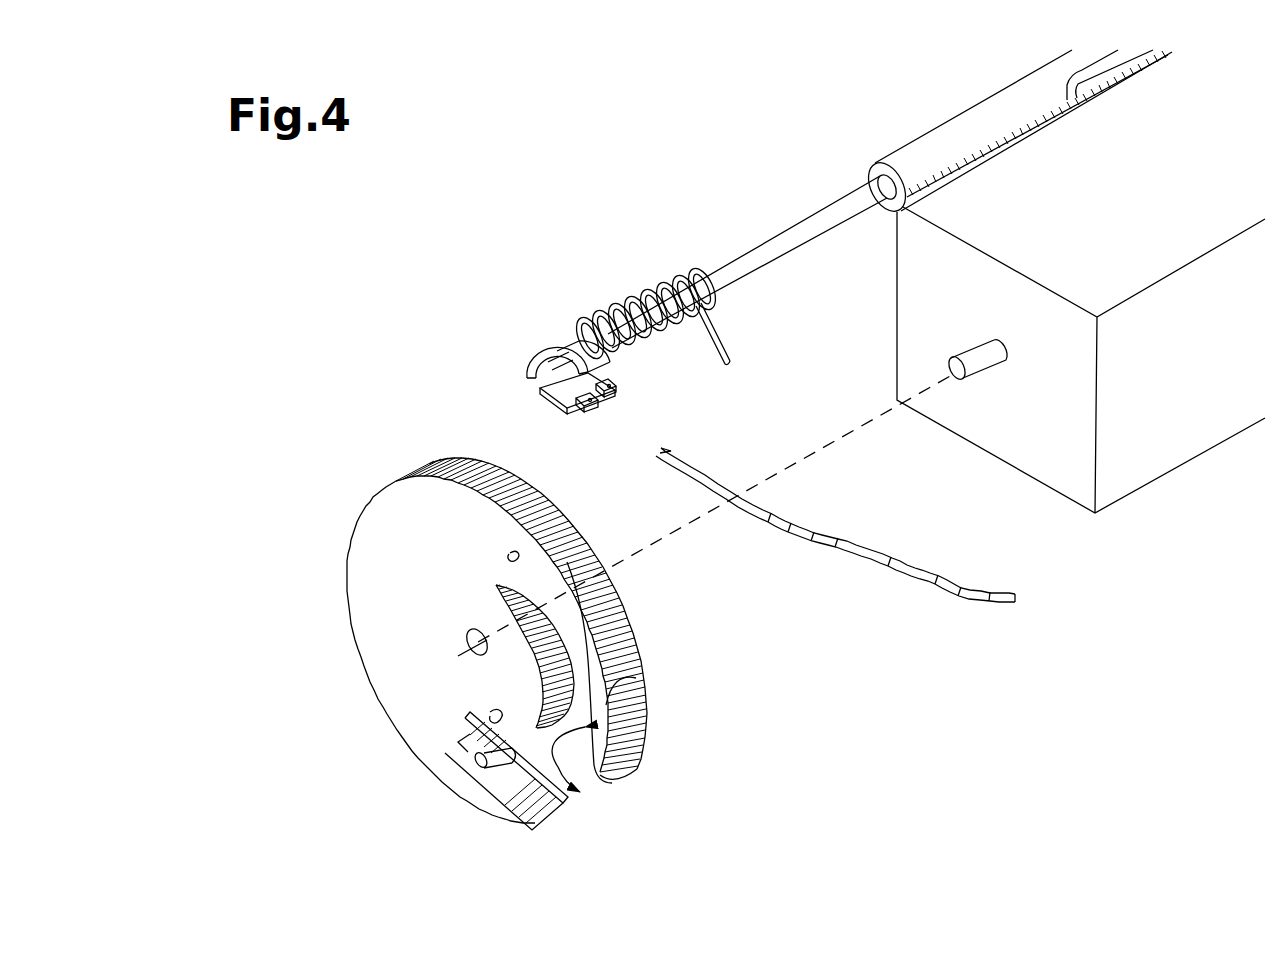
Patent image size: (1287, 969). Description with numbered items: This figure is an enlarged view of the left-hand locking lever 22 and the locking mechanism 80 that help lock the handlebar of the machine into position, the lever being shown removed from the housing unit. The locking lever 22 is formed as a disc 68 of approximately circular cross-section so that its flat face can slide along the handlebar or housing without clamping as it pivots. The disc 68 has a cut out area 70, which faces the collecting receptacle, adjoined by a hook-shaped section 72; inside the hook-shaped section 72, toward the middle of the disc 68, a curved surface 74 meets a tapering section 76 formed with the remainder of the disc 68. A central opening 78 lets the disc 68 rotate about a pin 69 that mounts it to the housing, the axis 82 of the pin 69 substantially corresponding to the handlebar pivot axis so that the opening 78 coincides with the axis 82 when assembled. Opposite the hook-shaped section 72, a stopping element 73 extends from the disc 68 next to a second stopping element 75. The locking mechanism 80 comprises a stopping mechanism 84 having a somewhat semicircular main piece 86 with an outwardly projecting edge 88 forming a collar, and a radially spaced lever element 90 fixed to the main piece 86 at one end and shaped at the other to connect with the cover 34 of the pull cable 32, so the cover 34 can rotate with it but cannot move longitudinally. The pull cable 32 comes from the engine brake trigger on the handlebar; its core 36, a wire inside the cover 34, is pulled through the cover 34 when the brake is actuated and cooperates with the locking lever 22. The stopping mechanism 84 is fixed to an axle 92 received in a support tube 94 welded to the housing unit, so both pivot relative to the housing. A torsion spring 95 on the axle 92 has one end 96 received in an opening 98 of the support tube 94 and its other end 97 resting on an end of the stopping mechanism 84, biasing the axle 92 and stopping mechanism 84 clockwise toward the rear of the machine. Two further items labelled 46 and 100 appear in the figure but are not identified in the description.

The locking lever 22 is at (464, 563).
The pull cable 32 is at (752, 482).
The cover 34 is at (806, 545).
The core 36 is at (672, 453).
The opening 46 is at (510, 555).
The disc 68 is at (378, 548).
The pin 69 is at (978, 352).
The cut out area 70 is at (540, 752).
The hook-shaped section 72 is at (634, 680).
The stopping element 73 is at (468, 734).
The curved surface 74 is at (585, 792).
The second stopping element 75 is at (480, 767).
The tapering section 76 is at (600, 776).
The central opening 78 is at (488, 642).
The locking mechanism 80 is at (495, 358).
The axis 82 is at (1081, 360).
The stopping mechanism 84 is at (495, 364).
The main piece 86 is at (540, 387).
The outwardly projecting edge 88 is at (560, 353).
The lever element 90 is at (568, 390).
The axle 92 is at (813, 220).
The support tube 94 is at (1028, 88).
The torsion spring 95 is at (653, 294).
The end of spring 96 is at (560, 358).
The other end of spring 97 is at (597, 312).
The opening 98 is at (1075, 70).
The pin 100 is at (608, 381).